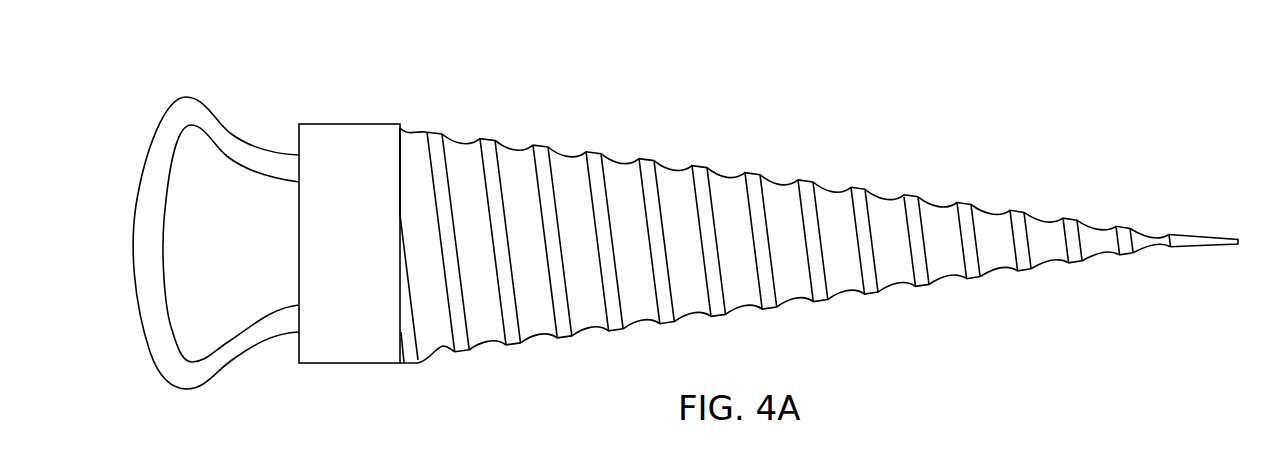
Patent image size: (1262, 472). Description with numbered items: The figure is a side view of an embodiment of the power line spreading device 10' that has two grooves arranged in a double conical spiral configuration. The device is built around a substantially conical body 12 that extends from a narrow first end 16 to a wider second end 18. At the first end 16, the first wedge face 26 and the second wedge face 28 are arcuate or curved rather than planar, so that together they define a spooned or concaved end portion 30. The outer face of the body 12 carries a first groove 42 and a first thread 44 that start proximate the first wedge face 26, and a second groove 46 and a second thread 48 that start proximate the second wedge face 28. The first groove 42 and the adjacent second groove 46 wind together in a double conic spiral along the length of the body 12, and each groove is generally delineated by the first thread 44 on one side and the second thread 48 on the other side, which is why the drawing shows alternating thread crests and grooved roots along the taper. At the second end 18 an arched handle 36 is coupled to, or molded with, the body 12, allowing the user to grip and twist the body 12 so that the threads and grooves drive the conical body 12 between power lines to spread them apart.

The spreading device 10' is at (685, 207).
The body 12 is at (797, 304).
The first end 16 is at (1205, 237).
The second end 18 is at (345, 124).
The first wedge face 26 is at (1172, 235).
The second wedge face 28 is at (1156, 251).
The concaved end portion 30 is at (1181, 246).
The arched handle 36 is at (199, 97).
The first groove 42 is at (728, 180).
The first thread 44 is at (700, 166).
The second groove 46 is at (694, 310).
The second thread 48 is at (667, 322).